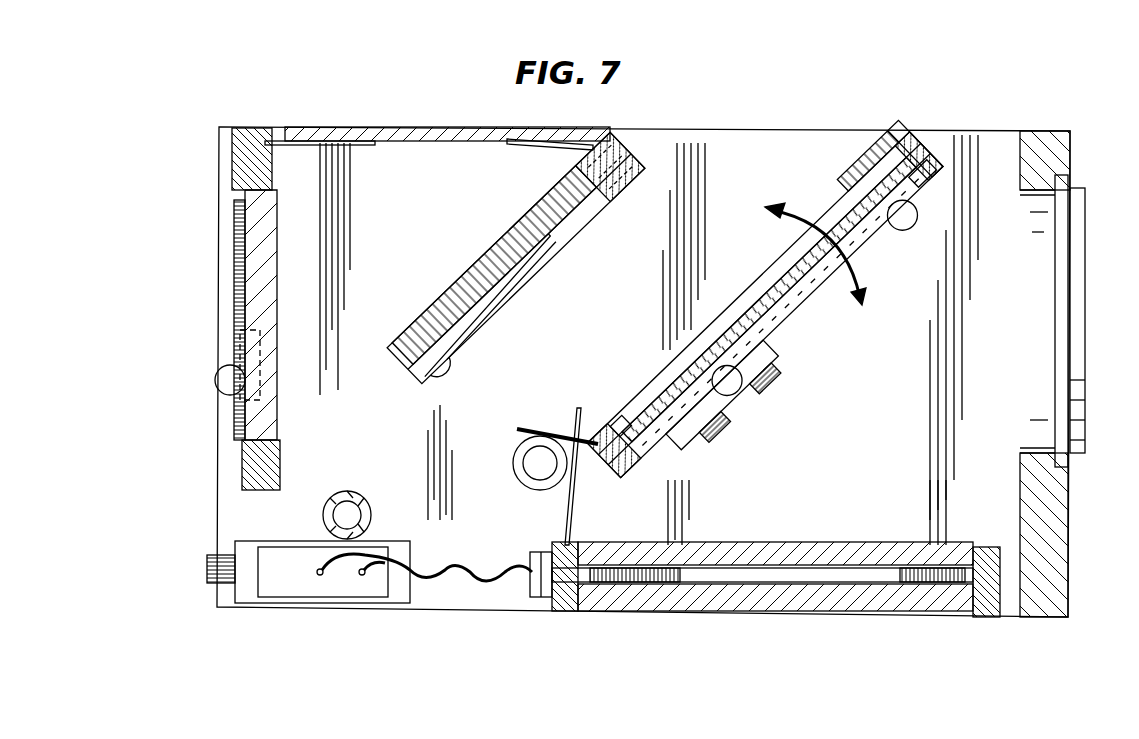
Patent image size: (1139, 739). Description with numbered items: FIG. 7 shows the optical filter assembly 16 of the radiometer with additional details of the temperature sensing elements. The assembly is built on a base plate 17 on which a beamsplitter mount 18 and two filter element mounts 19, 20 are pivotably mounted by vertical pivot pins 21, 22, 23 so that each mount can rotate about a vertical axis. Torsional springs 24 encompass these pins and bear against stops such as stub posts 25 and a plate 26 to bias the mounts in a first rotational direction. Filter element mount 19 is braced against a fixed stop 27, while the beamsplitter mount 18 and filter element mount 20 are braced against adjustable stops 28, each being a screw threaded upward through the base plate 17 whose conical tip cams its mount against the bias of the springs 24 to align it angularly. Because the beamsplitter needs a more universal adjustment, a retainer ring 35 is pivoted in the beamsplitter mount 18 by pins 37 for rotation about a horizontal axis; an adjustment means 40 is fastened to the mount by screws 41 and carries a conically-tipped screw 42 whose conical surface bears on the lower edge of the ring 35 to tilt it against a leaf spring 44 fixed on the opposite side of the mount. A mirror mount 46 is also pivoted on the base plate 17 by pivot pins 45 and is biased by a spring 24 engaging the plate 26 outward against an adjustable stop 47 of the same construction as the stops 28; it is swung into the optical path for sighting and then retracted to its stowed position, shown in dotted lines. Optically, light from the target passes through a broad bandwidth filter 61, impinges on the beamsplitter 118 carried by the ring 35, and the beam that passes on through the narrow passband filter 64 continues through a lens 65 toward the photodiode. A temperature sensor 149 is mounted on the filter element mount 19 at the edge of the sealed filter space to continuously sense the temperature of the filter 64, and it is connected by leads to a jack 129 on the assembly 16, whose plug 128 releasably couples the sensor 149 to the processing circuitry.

The optical filter assembly 16 is at (944, 122).
The base plate 17 is at (714, 150).
The beamsplitter mount 18 is at (920, 135).
The filter element mount 19 is at (986, 608).
The filter element mount 20 is at (234, 128).
The vertical pivot pin 21 is at (628, 405).
The vertical pivot pin 22 is at (593, 614).
The vertical pivot pin 23 is at (245, 128).
The torsional spring 24 is at (370, 143).
The stub post 25 is at (512, 472).
The plate 26 is at (396, 127).
The stop 27 is at (958, 610).
The adjustable stop 28 is at (222, 372).
The retainer ring 35 is at (946, 198).
The pin 37 is at (942, 160).
The adjustment means 40 is at (745, 406).
The screw 41 is at (792, 386).
The conically-tipped screw 42 is at (776, 352).
The leaf spring 44 is at (846, 168).
The pivot pin 45 is at (610, 203).
The mirror mount 46 is at (626, 150).
The adjustable stop 47 is at (460, 368).
The broad bandwidth filter 61 is at (1087, 236).
The narrow passband filter 64 is at (760, 548).
The lens 65 is at (762, 612).
The beamsplitter 118 is at (826, 305).
The plug 128 is at (208, 570).
The jack 129 is at (316, 600).
The temperature sensor 149 is at (522, 600).